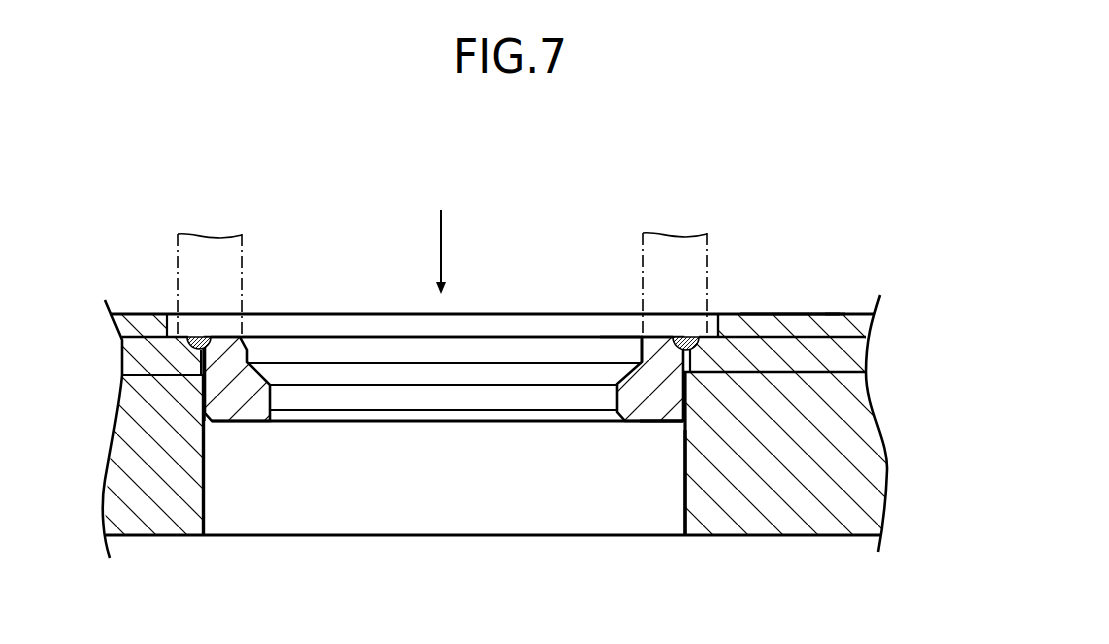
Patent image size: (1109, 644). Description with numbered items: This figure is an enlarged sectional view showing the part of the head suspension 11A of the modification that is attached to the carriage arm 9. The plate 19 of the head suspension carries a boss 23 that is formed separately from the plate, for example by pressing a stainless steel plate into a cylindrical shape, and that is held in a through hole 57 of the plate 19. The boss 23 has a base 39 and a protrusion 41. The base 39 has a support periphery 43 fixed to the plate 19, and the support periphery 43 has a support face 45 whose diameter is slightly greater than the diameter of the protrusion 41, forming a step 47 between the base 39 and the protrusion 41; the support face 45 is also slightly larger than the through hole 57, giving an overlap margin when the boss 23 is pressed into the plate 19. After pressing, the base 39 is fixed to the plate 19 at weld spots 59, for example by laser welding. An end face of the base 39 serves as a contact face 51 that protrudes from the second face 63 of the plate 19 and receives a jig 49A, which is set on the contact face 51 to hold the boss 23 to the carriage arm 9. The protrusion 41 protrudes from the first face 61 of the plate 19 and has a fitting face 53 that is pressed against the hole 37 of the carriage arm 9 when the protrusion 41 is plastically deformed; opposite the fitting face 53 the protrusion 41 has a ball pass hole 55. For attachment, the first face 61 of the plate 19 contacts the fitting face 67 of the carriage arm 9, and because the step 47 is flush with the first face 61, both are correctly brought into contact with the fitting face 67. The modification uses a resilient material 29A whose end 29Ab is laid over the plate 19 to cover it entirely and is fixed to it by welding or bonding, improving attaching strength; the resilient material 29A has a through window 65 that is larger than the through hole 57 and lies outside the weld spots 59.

The carriage arm 9 is at (794, 507).
The head suspension 11A is at (768, 313).
The plate 19 is at (867, 348).
The boss 23 is at (503, 334).
The resilient material 29A is at (818, 312).
The end of the resilient material 29Ab is at (835, 312).
The hole 37 is at (685, 518).
The base 39 is at (628, 337).
The protrusion 41 is at (625, 422).
The support periphery 43 is at (692, 340).
The support face 45 is at (718, 337).
The step 47 is at (695, 390).
The jig 49A is at (658, 232).
The contact face 51 is at (651, 338).
The fitting face 53 is at (688, 410).
The ball pass hole 55 is at (585, 423).
The through hole 57 is at (678, 422).
The weld spots 59 is at (699, 340).
The first face 61 is at (833, 373).
The second face 63 is at (803, 330).
The window 65 is at (173, 317).
The fitting face 67 is at (865, 362).